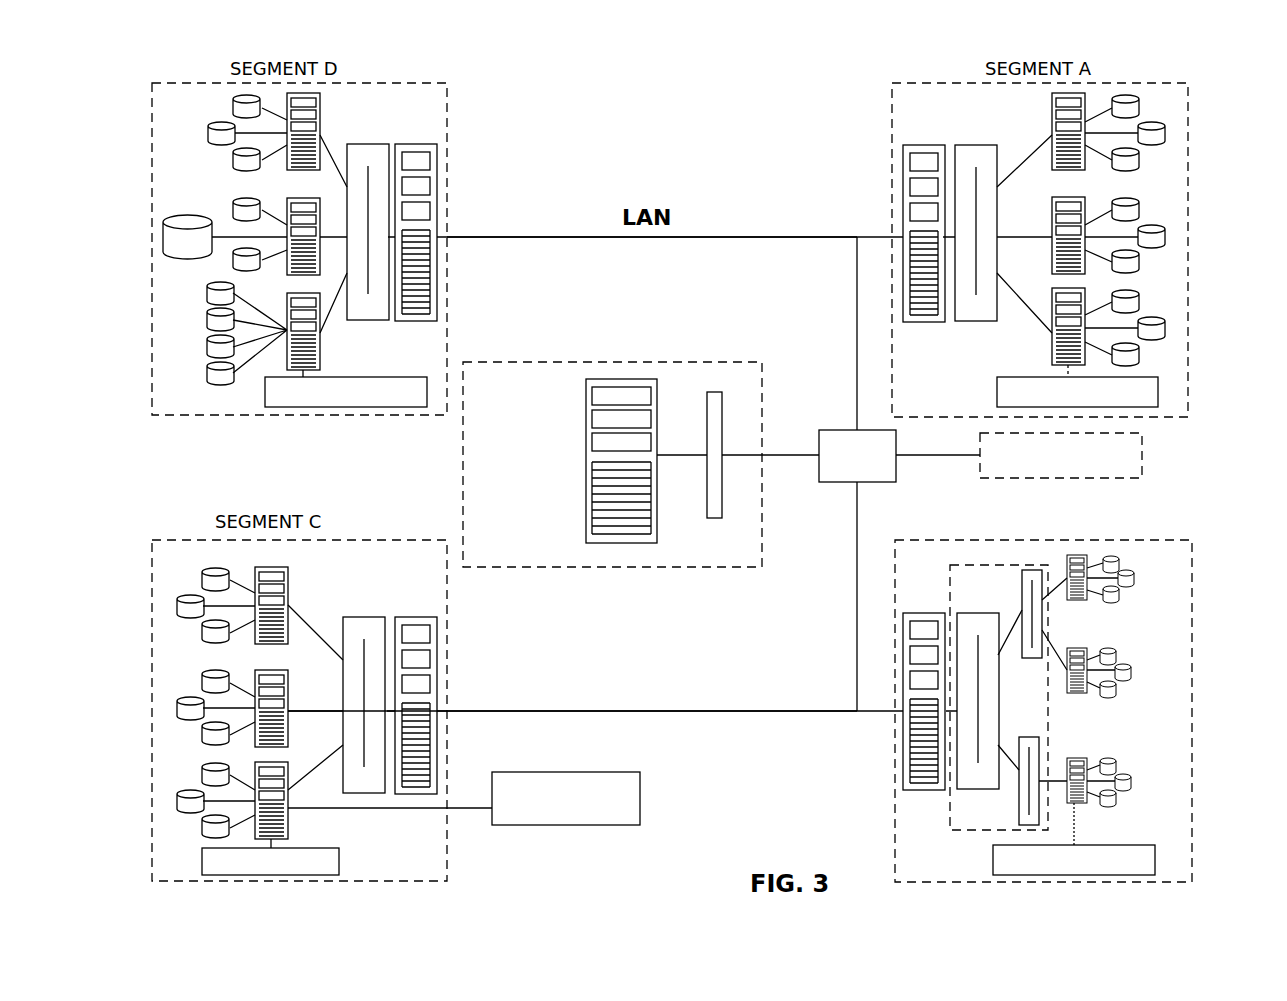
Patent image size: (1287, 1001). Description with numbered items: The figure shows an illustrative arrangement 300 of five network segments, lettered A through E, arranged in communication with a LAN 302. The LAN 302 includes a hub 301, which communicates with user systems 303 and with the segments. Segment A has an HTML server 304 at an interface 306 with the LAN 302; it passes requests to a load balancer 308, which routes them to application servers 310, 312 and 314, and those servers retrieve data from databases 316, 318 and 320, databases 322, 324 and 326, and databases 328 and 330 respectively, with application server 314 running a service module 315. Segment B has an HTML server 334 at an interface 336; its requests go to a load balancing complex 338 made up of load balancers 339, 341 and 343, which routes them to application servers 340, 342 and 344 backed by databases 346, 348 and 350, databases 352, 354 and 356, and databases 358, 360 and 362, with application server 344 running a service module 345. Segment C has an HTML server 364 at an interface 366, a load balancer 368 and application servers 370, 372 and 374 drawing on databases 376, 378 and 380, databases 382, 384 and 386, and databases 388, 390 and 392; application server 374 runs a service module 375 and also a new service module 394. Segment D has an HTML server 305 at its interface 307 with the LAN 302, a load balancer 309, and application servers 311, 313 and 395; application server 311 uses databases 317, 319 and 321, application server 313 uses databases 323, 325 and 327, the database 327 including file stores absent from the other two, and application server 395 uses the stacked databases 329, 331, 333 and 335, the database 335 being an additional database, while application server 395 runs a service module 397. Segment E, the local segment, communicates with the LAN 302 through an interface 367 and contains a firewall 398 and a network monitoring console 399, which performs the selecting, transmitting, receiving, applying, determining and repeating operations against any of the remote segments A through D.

The arrangement 300 is at (521, 71).
The hub 301 is at (840, 430).
The LAN 302 is at (705, 237).
The user systems 303 is at (1142, 455).
The HTML server 304 is at (903, 145).
The HTML server 305 is at (437, 188).
The interface 306 is at (892, 236).
The LAN connection 307 is at (447, 237).
The load balancer 308 is at (965, 145).
The load balancer 309 is at (377, 144).
The application server 310 is at (1085, 108).
The application server 311 is at (322, 112).
The application server 312 is at (1052, 215).
The application server 313 is at (285, 268).
The application server 314 is at (1052, 350).
The service module 315 is at (1158, 392).
The database 316 is at (1138, 108).
The database 317 is at (233, 108).
The database 318 is at (1165, 133).
The database 319 is at (208, 133).
The database 320 is at (1138, 160).
The database 321 is at (233, 160).
The database 322 is at (1138, 210).
The database 323 is at (233, 210).
The database 324 is at (1165, 237).
The database 325 is at (165, 238).
The database 326 is at (1138, 262).
The database 327 is at (233, 260).
The database 328 is at (1138, 302).
The database 329 is at (207, 293).
The database 330 is at (1165, 328).
The database 331 is at (207, 320).
The storage device 333 is at (207, 347).
The HTML server 334 is at (915, 613).
The database 335 is at (207, 373).
The interface 336 is at (895, 711).
The load balancing complex 338 is at (920, 540).
The load balancer 339 is at (965, 613).
The application server 340 is at (1082, 555).
The load balancer 341 is at (1022, 580).
The application server 342 is at (1077, 693).
The load balancer 343 is at (1025, 737).
The application server 344 is at (1082, 803).
The service module 345 is at (993, 868).
The database 346 is at (1119, 563).
The database 348 is at (1134, 578).
The database 350 is at (1119, 594).
The database 352 is at (1108, 648).
The database 354 is at (1131, 670).
The database 356 is at (1116, 688).
The database 358 is at (1108, 758).
The database 360 is at (1131, 781).
The database 362 is at (1116, 797).
The HTML server 364 is at (437, 660).
The interface 366 is at (447, 711).
The interface 367 is at (762, 455).
The load balancer 368 is at (372, 617).
The application server 370 is at (288, 592).
The application server 372 is at (290, 700).
The application server 374 is at (290, 782).
The service module 375 is at (339, 858).
The database 376 is at (202, 580).
The database 378 is at (177, 606).
The database 380 is at (202, 633).
The database 382 is at (202, 683).
The database 384 is at (177, 708).
The database 386 is at (202, 735).
The database 388 is at (202, 775).
The database 390 is at (177, 801).
The database 392 is at (202, 828).
The new service module 394 is at (573, 825).
The application server 395 is at (320, 362).
The service module 397 is at (385, 407).
The firewall 398 is at (722, 440).
The network monitoring console 399 is at (622, 543).